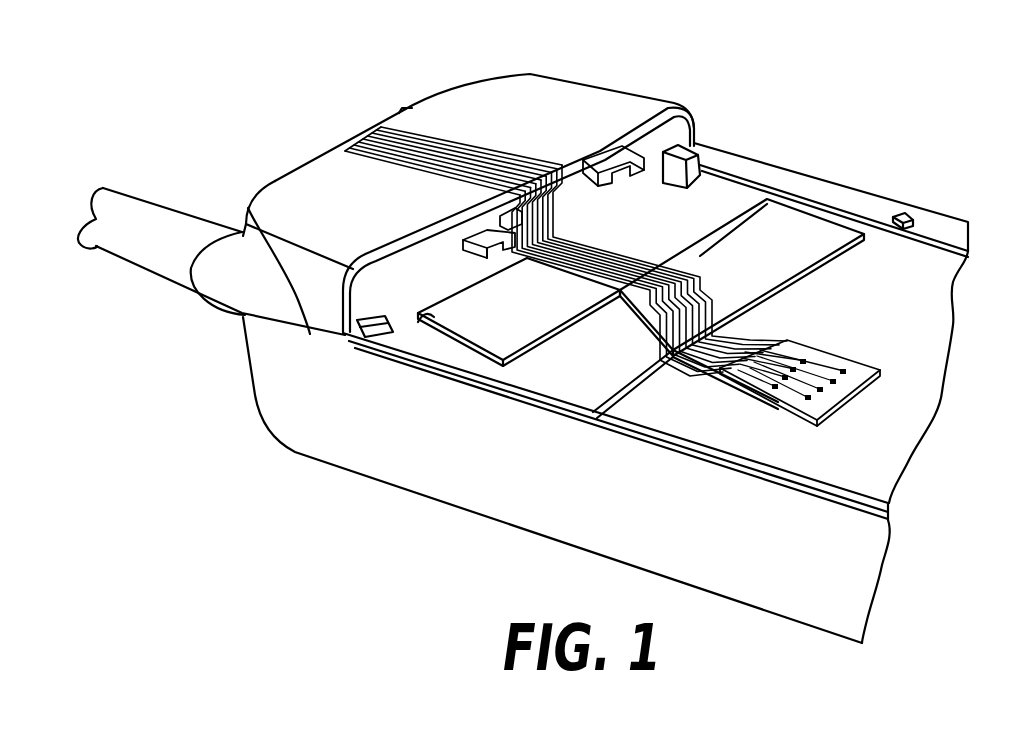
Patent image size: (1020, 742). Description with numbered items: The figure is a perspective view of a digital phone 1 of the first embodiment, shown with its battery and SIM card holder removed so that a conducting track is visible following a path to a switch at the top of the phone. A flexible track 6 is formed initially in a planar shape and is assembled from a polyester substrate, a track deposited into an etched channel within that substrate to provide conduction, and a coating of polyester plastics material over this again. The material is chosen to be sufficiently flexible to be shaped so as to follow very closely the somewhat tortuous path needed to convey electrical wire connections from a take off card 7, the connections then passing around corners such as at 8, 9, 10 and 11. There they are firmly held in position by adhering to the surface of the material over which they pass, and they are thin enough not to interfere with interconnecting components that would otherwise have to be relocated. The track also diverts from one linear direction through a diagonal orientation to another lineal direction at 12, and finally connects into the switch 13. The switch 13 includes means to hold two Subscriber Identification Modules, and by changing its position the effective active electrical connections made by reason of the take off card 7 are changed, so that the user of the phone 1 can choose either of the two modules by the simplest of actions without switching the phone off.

The phone 1 is at (636, 93).
The flexible track 6 is at (598, 256).
The take off card 7 is at (815, 354).
The corner 8 is at (722, 330).
The corner 9 is at (617, 296).
The corner 10 is at (520, 262).
The corner 11 is at (571, 172).
The diagonal orientation 12 is at (688, 278).
The switch 13 is at (384, 126).